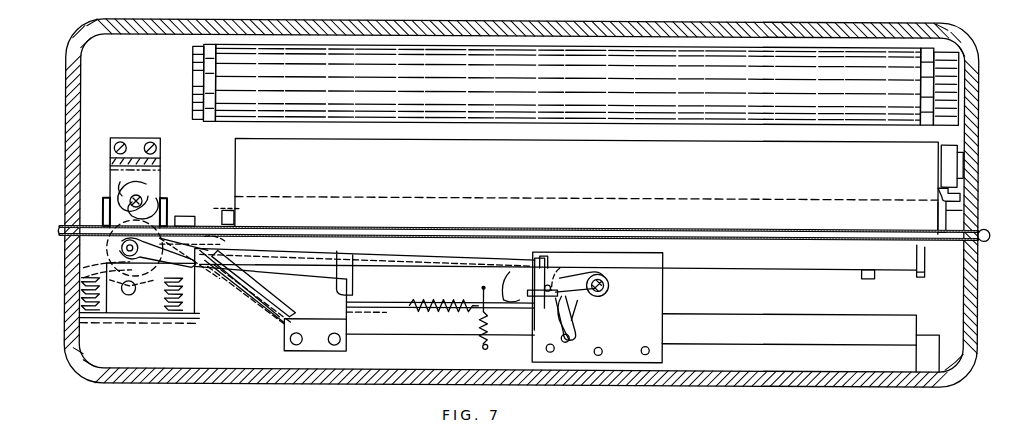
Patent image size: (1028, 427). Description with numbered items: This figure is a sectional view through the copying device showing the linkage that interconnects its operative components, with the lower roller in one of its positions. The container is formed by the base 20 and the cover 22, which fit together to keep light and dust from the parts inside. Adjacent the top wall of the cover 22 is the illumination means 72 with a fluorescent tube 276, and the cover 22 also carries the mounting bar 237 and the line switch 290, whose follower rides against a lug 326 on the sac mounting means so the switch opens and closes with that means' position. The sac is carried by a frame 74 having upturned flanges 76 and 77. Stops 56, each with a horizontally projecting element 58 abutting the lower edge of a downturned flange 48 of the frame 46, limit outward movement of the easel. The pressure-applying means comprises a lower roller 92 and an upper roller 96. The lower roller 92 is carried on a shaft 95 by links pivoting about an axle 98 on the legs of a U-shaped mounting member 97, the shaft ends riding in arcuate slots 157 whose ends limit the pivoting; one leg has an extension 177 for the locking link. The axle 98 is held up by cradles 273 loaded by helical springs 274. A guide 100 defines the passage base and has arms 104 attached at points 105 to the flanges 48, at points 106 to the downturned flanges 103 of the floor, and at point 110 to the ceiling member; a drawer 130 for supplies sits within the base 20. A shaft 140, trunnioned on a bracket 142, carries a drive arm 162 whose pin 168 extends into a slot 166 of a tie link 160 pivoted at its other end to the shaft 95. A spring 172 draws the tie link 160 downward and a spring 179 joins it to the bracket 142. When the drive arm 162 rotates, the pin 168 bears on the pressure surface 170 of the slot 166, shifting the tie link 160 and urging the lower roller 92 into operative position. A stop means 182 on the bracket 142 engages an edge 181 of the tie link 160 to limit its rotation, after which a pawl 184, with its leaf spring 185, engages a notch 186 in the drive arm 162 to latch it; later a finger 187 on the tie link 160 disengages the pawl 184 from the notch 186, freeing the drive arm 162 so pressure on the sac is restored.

The base 20 is at (792, 386).
The cover 22 is at (976, 28).
The frame 46 is at (723, 242).
The downturned flange 48 is at (466, 236).
The stop 56 is at (860, 270).
The horizontally projecting element 58 is at (868, 278).
The illumination means 72 is at (966, 79).
The frame 74 is at (808, 230).
The upturned flange 76 is at (966, 220).
The upturned flange 77 is at (706, 150).
The lower roller 92 is at (182, 240).
The shaft 95 is at (122, 258).
The upper roller 96 is at (104, 208).
The U-shaped mounting member 97 is at (122, 251).
The axle 98 is at (131, 300).
The guide 100 is at (238, 312).
The downturned flange 103 is at (858, 380).
The arm 104 is at (264, 304).
The attachment point 105 is at (184, 221).
The attachment point 106 is at (297, 346).
The attachment point 110 is at (222, 226).
The drawer 130 is at (936, 370).
The shaft 140 is at (606, 280).
The bracket 142 is at (662, 356).
The arcuate slot 157 is at (84, 276).
The tie link 160 is at (356, 265).
The drive arm 162 is at (612, 286).
The slot 166 is at (534, 280).
The pin 168 is at (542, 302).
The pressure surface 170 is at (546, 268).
The spring 172 is at (484, 344).
The extension 177 is at (192, 290).
The spring 179 is at (444, 308).
The edge 181 is at (482, 286).
The stop means 182 is at (534, 290).
The pawl 184 is at (598, 316).
The leaf spring 185 is at (594, 350).
The notch 186 is at (552, 346).
The finger 187 is at (560, 264).
The mounting bar 237 is at (160, 166).
The cradle 273 is at (142, 302).
The helical spring 274 is at (102, 314).
The fluorescent tube 276 is at (599, 78).
The line switch 290 is at (966, 159).
The lug 326 is at (966, 193).